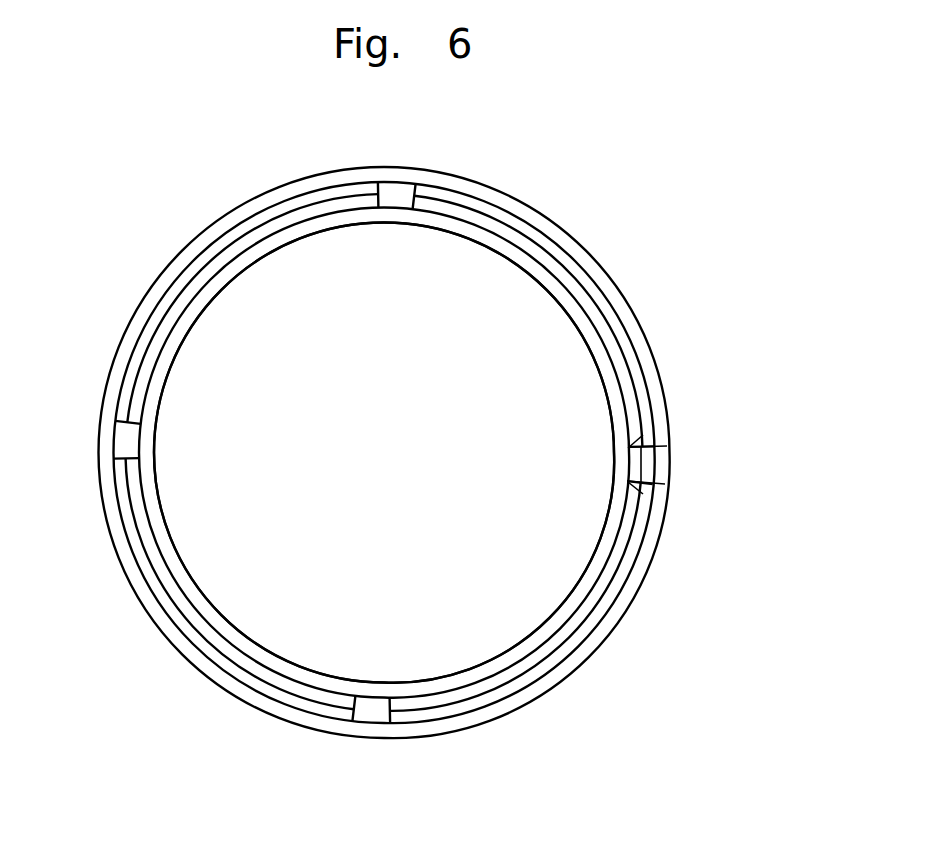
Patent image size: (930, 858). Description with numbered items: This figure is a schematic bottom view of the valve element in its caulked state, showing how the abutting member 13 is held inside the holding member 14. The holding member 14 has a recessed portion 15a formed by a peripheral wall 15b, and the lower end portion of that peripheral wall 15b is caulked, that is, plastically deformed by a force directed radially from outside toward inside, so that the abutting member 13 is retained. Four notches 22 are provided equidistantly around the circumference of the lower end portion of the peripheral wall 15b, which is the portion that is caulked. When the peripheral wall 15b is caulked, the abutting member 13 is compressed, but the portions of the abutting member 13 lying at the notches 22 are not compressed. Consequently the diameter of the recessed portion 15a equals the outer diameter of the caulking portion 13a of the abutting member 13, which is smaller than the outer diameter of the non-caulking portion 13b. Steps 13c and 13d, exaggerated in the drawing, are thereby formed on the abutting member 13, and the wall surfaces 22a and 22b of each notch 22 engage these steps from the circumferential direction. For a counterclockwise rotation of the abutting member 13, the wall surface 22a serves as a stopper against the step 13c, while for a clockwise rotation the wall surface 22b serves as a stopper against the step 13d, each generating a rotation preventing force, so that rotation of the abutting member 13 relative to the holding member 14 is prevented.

The abutting member 13 is at (508, 598).
The caulking portion 13a is at (603, 547).
The non-caulking portion 13b is at (645, 445).
The step 13c is at (633, 441).
The step 13d is at (634, 489).
The holding member 14 is at (661, 548).
The recessed portion 15a is at (589, 591).
The peripheral wall 15b is at (603, 325).
The notch 22 is at (402, 196).
The wall surface 22a is at (660, 448).
The wall surface 22b is at (650, 484).